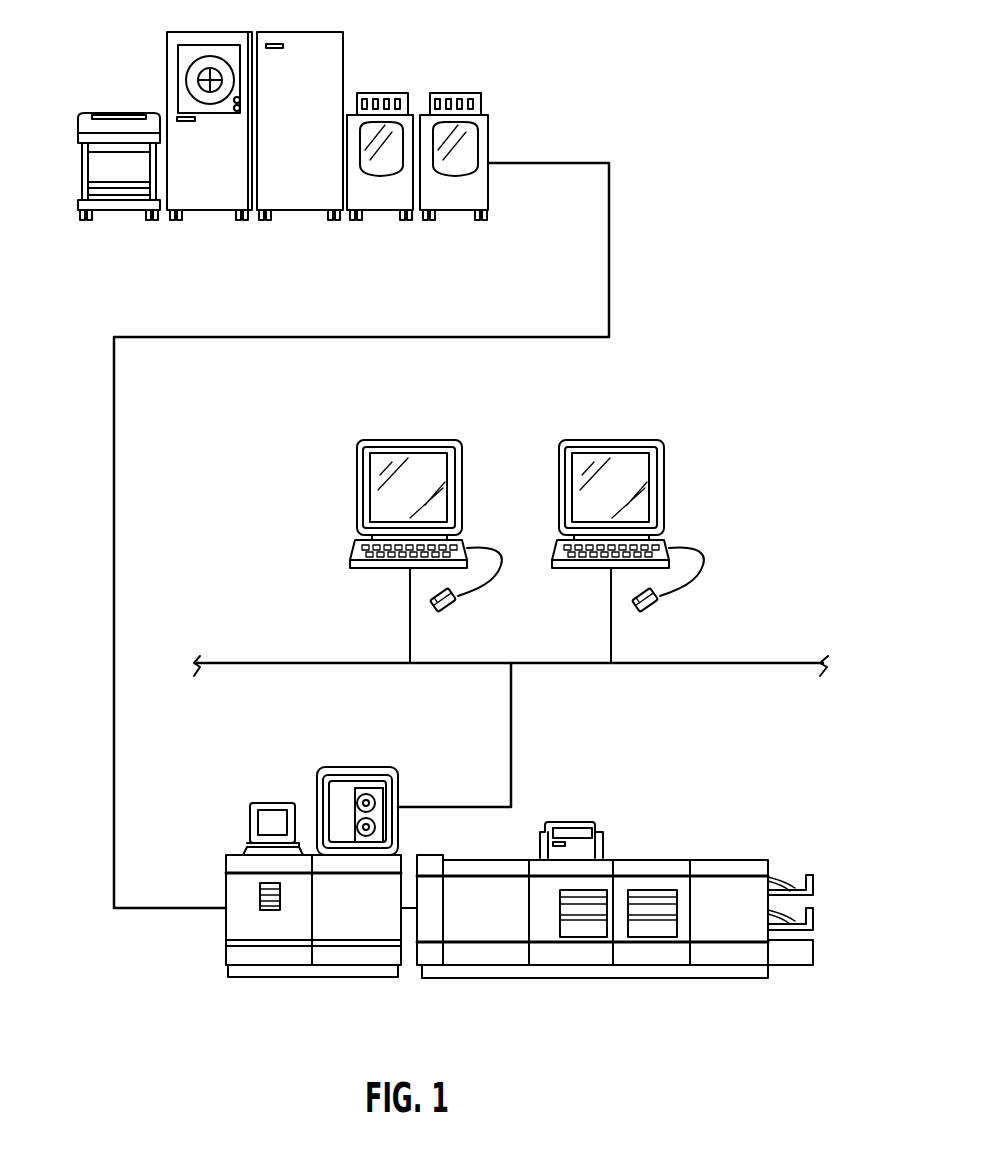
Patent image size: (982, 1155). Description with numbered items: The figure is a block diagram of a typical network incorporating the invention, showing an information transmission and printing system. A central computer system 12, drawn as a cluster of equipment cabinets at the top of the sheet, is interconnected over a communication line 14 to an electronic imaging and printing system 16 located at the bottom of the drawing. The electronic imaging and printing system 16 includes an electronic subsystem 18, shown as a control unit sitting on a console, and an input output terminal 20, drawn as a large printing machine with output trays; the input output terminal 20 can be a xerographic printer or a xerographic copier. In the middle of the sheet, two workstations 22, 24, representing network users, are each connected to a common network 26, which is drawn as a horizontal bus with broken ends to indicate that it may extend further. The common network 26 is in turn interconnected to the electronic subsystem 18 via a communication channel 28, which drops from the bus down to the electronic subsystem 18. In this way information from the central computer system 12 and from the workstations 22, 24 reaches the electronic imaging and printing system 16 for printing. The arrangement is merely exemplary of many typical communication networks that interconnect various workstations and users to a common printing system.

The central computer system 12 is at (364, 60).
The communication line 14 is at (114, 568).
The electronic imaging and printing system 16 is at (550, 1000).
The electronic subsystem 18 is at (334, 767).
The input output terminal 20 is at (686, 860).
The workstation 22 is at (376, 440).
The workstation 24 is at (623, 524).
The common network 26 is at (259, 663).
The communication channel 28 is at (512, 735).